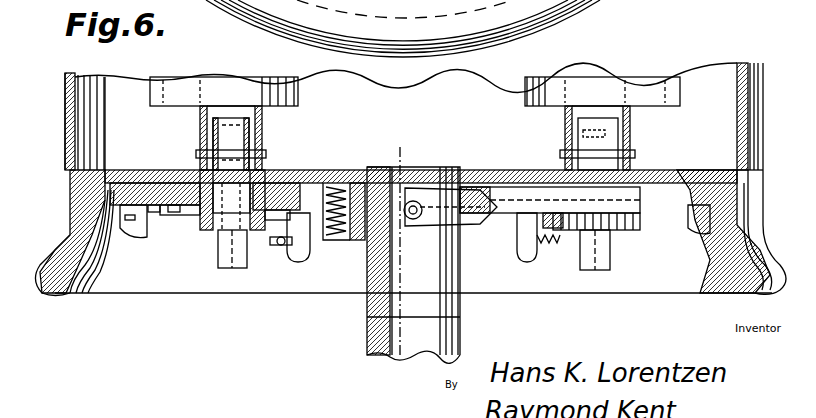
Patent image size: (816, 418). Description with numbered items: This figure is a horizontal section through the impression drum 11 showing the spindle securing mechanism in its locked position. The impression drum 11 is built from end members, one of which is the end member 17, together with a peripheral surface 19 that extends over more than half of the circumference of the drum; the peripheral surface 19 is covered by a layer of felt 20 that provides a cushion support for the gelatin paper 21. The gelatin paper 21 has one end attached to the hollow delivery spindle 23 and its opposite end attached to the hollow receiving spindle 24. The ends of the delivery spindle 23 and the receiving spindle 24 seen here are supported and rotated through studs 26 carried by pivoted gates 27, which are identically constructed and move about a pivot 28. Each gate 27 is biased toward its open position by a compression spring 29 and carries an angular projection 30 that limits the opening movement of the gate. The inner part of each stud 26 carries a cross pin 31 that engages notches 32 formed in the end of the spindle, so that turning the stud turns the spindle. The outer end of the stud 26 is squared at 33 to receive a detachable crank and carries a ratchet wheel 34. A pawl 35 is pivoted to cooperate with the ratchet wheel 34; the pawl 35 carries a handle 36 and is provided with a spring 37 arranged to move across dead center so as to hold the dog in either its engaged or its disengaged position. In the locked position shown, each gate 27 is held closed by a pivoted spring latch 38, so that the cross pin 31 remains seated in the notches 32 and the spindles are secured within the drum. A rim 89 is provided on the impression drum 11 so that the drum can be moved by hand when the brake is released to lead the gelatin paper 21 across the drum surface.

The impression drum 11 is at (74, 185).
The end member 17 is at (333, 175).
The peripheral surface 19 is at (68, 132).
The layer of felt 20 is at (66, 108).
The gelatin paper 21 is at (66, 88).
The hollow delivery spindle 23 is at (262, 122).
The hollow receiving spindle 24 is at (566, 118).
The stud 26 is at (265, 140).
The pivoted gate 27 is at (183, 216).
The pivot 28 is at (433, 168).
The compression spring 29 is at (336, 186).
The angular projection 30 is at (450, 197).
The cross pin 31 is at (212, 142).
The notches 32 is at (198, 157).
The squared end 33 is at (232, 269).
The ratchet wheel 34 is at (202, 262).
The pawl 35 is at (312, 217).
The handle 36 is at (301, 243).
The spring 37 is at (278, 246).
The pivoted spring latch 38 is at (140, 222).
The rim 89 is at (55, 294).